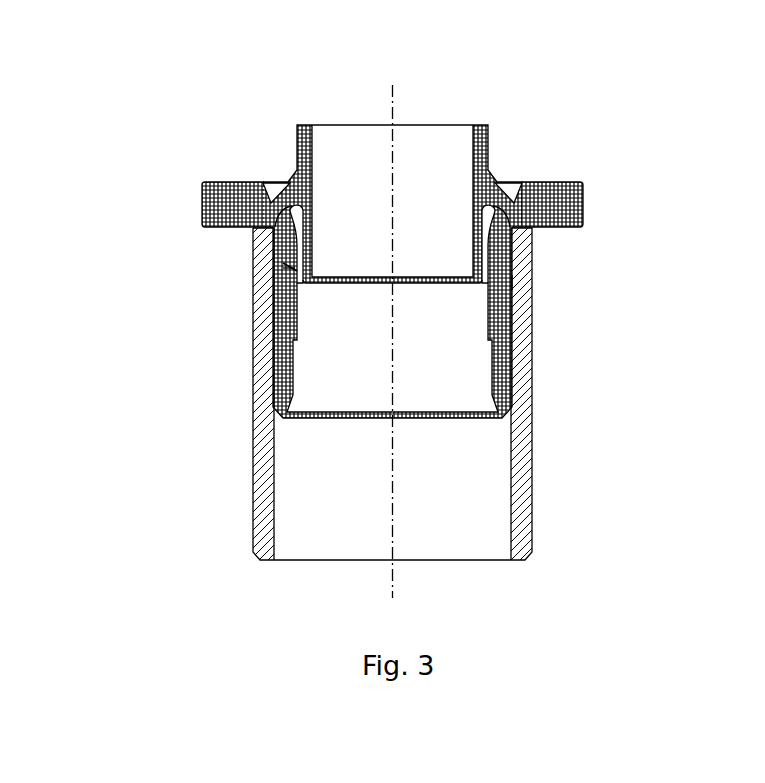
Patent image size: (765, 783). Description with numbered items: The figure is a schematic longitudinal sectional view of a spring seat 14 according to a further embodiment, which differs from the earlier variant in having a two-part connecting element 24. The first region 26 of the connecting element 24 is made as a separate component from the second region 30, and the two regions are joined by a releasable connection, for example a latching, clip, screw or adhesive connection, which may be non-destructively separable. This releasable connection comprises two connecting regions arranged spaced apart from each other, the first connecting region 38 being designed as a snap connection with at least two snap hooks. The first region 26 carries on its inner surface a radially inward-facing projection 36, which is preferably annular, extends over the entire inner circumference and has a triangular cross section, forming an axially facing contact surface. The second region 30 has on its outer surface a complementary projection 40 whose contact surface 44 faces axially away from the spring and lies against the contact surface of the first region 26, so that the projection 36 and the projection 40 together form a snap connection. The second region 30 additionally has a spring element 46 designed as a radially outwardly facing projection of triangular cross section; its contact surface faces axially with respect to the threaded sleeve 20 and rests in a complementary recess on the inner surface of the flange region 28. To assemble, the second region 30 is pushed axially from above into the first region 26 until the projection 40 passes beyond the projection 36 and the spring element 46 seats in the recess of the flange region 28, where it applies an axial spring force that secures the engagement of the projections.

The spring seat 14 is at (257, 97).
The threaded sleeve 20 is at (253, 515).
The connecting element 24 is at (443, 438).
The first region 26 is at (273, 323).
The flange region 28 is at (218, 205).
The second region 30 is at (297, 141).
The projection 36 is at (515, 262).
The first connecting region 38 is at (285, 267).
The projection 40 is at (520, 280).
The contact surface 44 is at (285, 270).
The spring element 46 is at (583, 182).